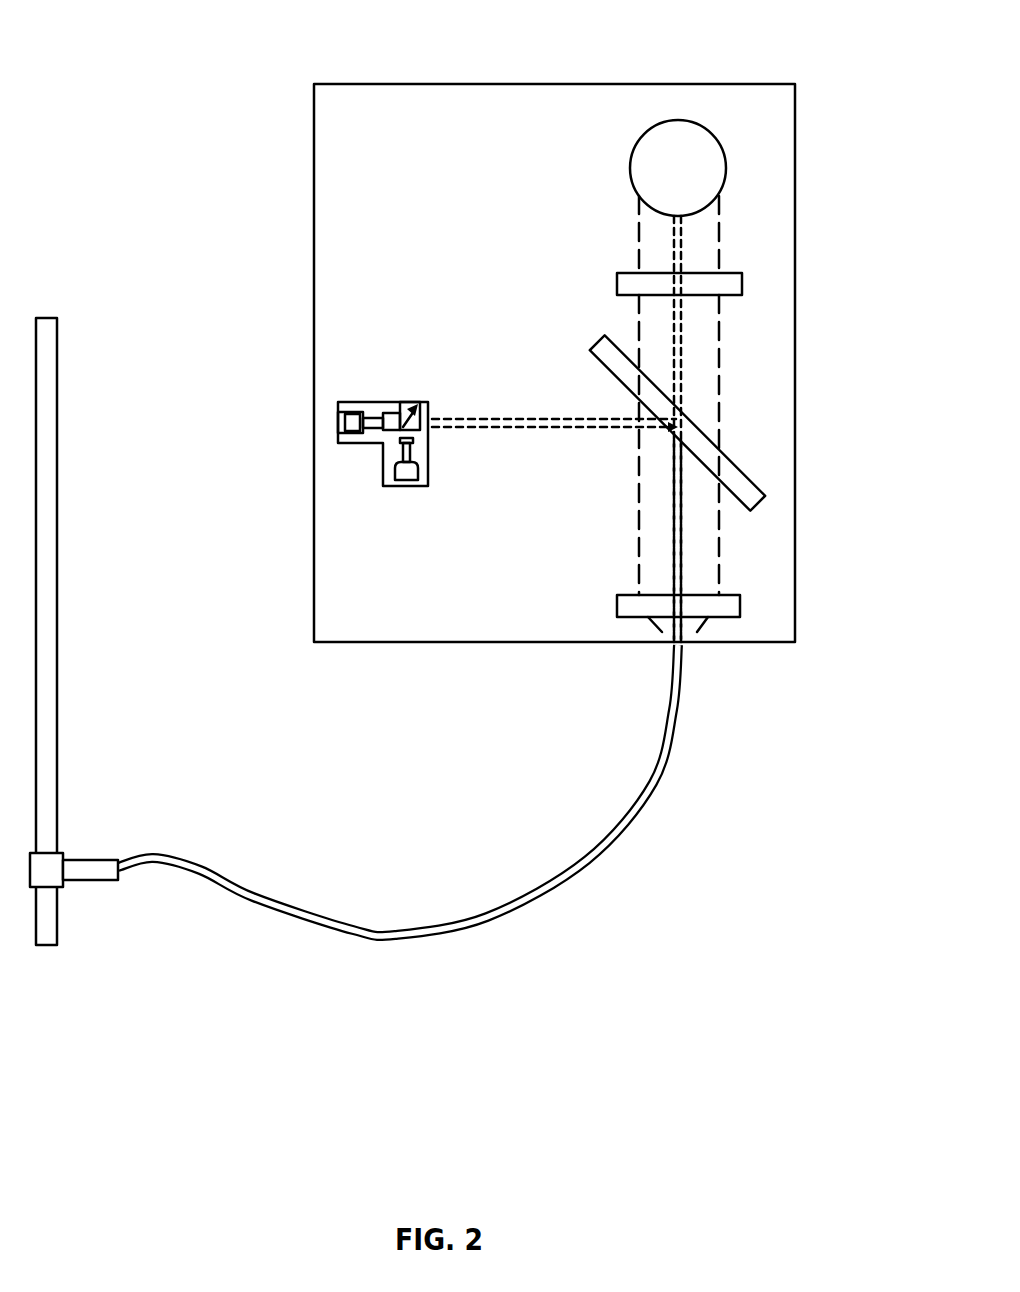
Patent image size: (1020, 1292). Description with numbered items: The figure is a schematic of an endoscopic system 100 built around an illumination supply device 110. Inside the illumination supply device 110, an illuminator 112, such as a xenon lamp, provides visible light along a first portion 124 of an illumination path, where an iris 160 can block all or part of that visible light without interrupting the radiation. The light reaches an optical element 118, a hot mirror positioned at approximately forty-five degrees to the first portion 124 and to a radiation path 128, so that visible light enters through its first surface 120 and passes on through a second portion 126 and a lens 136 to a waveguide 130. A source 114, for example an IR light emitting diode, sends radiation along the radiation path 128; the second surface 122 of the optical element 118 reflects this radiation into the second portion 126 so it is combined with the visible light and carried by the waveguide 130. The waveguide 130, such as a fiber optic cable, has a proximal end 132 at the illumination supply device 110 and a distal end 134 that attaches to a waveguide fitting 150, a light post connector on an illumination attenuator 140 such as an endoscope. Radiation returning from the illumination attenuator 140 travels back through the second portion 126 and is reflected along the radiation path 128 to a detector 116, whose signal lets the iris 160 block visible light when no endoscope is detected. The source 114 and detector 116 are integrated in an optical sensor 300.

The endoscopic system 100 is at (153, 83).
The illumination supply device 110 is at (548, 84).
The illuminator 112 is at (726, 168).
The iris 160 is at (742, 285).
The first portion 124 is at (681, 316).
The second portion 126 is at (681, 533).
The radiation path 128 is at (548, 428).
The optical element 118 is at (737, 483).
The first surface 120 is at (737, 462).
The second surface 122 is at (611, 378).
The lens 136 is at (740, 605).
The proximal end 132 is at (682, 643).
The waveguide 130 is at (637, 807).
The optical sensor 300 is at (363, 402).
The source 114 is at (338, 418).
The detector 116 is at (395, 470).
The illumination attenuator 140 is at (57, 632).
The waveguide fitting 150 is at (85, 880).
The distal end 134 is at (118, 862).